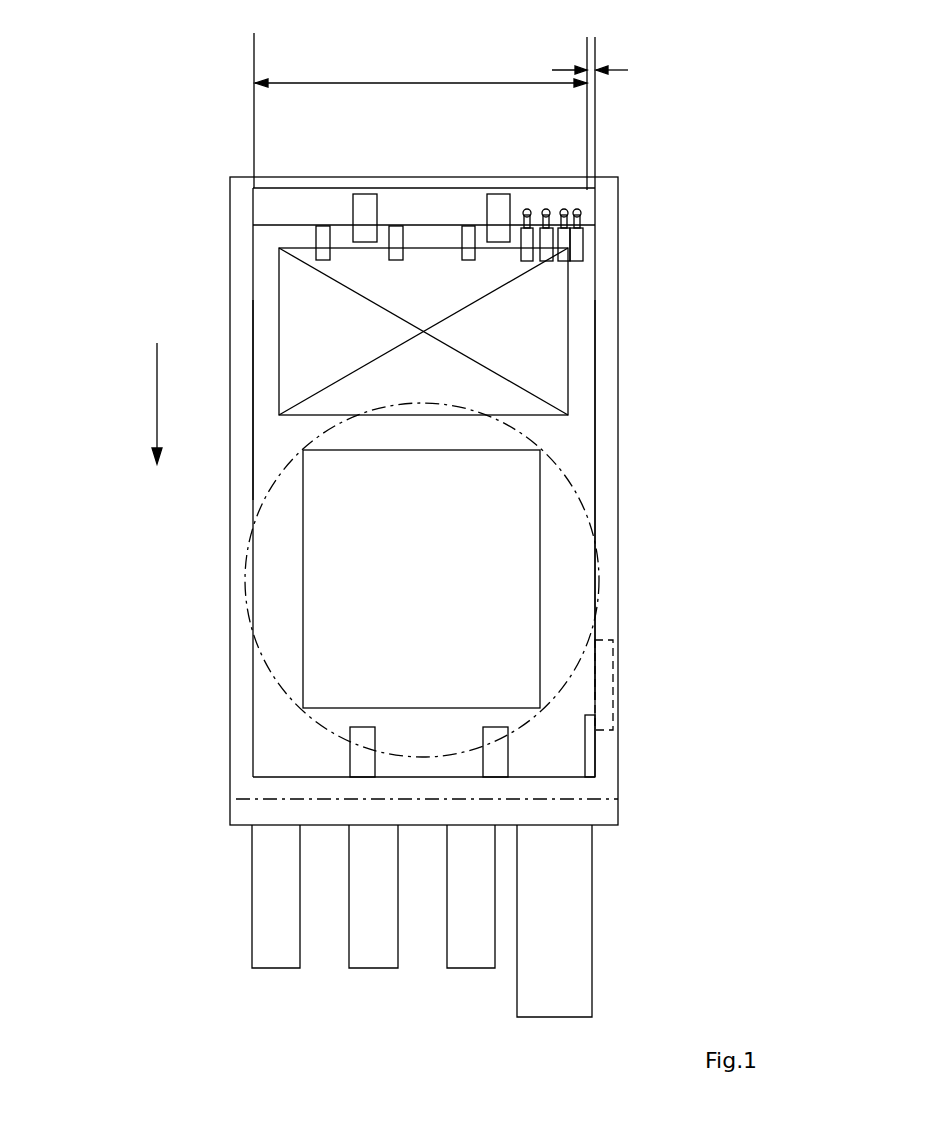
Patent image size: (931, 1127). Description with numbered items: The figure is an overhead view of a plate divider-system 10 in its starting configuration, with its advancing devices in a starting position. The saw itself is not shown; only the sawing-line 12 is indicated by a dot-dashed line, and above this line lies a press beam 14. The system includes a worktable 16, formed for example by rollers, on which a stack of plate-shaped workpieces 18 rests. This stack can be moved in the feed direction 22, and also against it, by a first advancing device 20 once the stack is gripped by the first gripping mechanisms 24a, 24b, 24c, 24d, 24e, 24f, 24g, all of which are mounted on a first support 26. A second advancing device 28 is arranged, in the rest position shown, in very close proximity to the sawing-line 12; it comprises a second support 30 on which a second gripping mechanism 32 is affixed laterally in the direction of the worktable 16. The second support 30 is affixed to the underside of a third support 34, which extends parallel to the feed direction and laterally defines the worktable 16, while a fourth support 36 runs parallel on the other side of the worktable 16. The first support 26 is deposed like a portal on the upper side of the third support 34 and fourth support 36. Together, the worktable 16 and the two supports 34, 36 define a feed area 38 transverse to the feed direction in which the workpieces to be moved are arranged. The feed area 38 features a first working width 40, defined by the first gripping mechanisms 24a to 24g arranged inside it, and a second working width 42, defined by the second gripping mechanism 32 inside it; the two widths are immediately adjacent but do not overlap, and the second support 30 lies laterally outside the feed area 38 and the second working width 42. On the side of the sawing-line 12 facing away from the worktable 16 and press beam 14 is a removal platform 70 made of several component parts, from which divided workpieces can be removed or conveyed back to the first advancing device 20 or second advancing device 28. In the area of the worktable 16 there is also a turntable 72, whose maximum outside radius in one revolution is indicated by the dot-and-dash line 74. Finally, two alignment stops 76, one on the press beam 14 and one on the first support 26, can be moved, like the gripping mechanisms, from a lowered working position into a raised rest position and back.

The plate divider-system 10 is at (156, 80).
The sawing-line 12 is at (235, 802).
The press beam 14 is at (237, 785).
The worktable 16 is at (577, 465).
The workpieces 18 is at (278, 297).
The first advancing device 20 is at (243, 205).
The feed direction 22 is at (157, 390).
The first gripping mechanism 24a is at (578, 262).
The first gripping mechanism 24b is at (563, 262).
The first gripping mechanism 24c is at (547, 262).
The first gripping mechanism 24d is at (528, 262).
The first gripping mechanism 24e is at (470, 247).
The first gripping mechanism 24f is at (395, 245).
The first gripping mechanism 24g is at (323, 245).
The first support 26 is at (282, 195).
The second advancing device 28 is at (626, 640).
The second support 30 is at (617, 682).
The second gripping mechanism 32 is at (597, 748).
The third support 34 is at (605, 512).
The fourth support 36 is at (242, 438).
The feed area 38 is at (244, 586).
The first working width 40 is at (378, 82).
The second working width 42 is at (615, 70).
The removal platform 70 is at (375, 968).
The turntable 72 is at (303, 535).
The maximum outside radius 74 is at (282, 690).
The alignment stops 76 is at (507, 245).